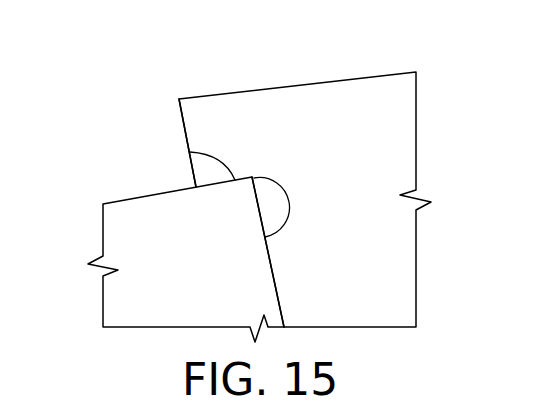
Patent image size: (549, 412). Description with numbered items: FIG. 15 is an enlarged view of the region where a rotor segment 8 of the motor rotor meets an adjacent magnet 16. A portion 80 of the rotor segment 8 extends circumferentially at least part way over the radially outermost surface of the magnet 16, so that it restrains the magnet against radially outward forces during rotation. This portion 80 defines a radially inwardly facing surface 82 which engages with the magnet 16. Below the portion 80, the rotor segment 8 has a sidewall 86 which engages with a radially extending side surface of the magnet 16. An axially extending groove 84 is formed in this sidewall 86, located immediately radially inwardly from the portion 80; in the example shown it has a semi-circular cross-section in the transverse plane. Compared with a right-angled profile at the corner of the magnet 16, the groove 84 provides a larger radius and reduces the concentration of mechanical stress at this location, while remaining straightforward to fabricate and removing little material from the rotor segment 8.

The rotor segment 8 is at (383, 102).
The magnet 16 is at (128, 212).
The portion 80 is at (203, 110).
The radially inwardly facing surface 82 is at (190, 152).
The axially extending groove 84 is at (292, 201).
The sidewall 86 is at (280, 301).